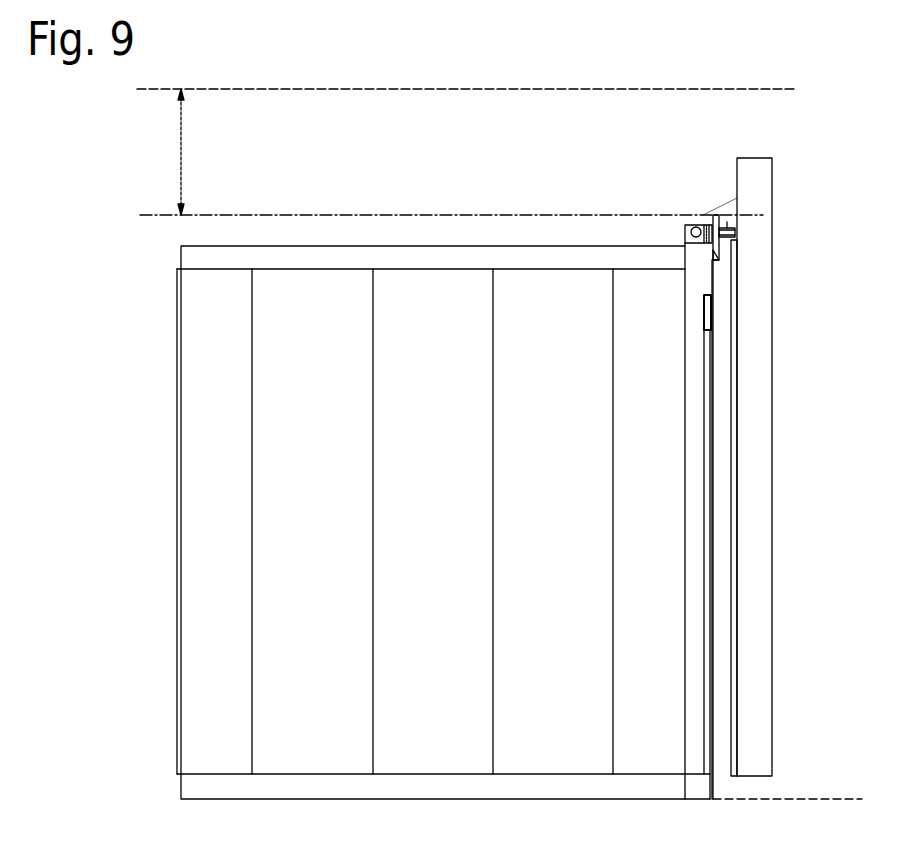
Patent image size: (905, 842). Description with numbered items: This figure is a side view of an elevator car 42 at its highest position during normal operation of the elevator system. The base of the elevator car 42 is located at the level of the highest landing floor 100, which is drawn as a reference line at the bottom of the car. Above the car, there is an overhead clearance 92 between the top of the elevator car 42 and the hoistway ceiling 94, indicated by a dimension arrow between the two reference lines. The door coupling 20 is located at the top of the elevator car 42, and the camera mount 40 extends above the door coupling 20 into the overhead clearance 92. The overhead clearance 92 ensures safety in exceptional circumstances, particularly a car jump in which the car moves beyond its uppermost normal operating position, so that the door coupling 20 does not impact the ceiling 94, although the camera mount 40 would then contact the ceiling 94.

The hoistway ceiling 94 is at (378, 89).
The overhead clearance 92 is at (180, 160).
The elevator car 42 is at (148, 393).
The camera mount 40 is at (700, 218).
The door coupling 20 is at (716, 218).
The highest landing floor 100 is at (855, 799).